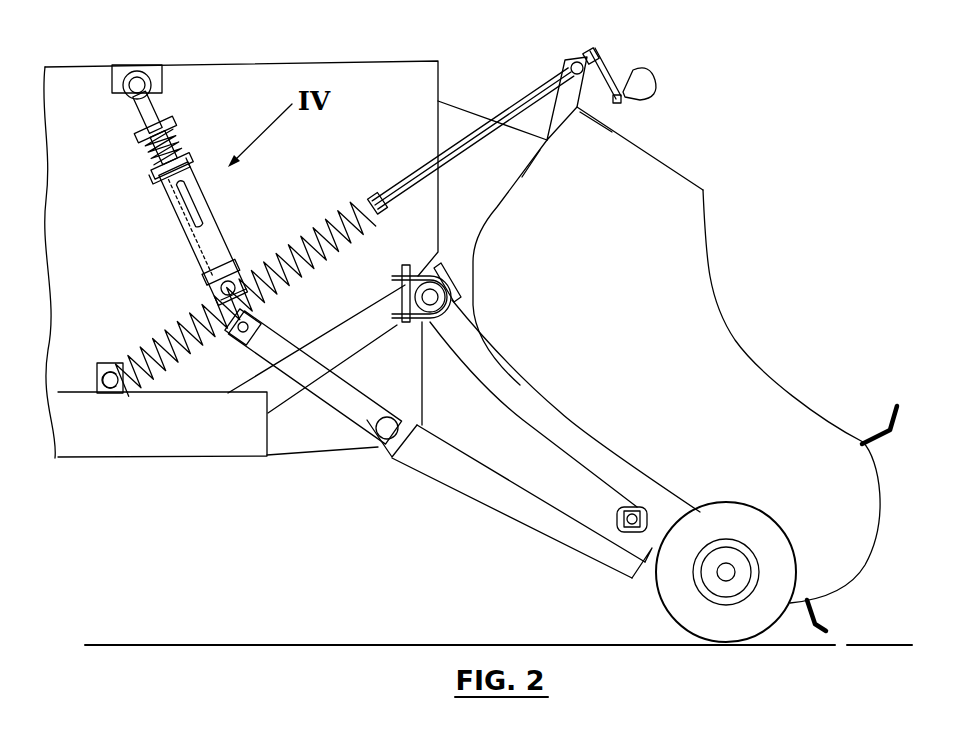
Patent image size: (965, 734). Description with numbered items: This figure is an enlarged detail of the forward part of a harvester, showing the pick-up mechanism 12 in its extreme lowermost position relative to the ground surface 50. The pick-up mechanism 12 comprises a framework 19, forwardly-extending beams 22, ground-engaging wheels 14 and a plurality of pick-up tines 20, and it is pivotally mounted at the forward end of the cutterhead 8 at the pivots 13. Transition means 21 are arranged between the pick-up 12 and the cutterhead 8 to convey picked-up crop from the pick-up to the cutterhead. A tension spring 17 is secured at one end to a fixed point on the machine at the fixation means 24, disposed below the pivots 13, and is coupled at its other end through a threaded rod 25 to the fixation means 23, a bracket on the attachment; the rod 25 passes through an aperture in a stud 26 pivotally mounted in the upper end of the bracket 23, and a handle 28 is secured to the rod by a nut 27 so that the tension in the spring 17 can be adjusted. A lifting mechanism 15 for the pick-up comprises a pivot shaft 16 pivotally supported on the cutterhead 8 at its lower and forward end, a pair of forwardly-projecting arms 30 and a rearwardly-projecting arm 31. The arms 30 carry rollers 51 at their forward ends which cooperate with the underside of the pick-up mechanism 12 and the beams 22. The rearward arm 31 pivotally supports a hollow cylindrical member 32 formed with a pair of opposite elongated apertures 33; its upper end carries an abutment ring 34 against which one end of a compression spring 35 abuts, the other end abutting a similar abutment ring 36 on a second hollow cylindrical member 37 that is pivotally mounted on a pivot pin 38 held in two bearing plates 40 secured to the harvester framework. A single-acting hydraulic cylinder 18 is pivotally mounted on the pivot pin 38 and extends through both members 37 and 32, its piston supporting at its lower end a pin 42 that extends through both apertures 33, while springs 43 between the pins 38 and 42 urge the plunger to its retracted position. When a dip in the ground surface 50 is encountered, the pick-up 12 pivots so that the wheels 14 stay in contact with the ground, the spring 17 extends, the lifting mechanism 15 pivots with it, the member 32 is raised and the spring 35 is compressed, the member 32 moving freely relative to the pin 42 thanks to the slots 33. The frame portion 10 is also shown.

The cutterhead 8 is at (414, 56).
The frame member 10 is at (205, 457).
The pick-up mechanism 12 is at (774, 350).
The pivots 13 is at (453, 292).
The ground-engaging wheels 14 is at (670, 612).
The lifting mechanism 15 is at (560, 536).
The pivot shaft 16 is at (383, 442).
The tension spring 17 is at (333, 217).
The hydraulic cylinder 18 is at (187, 148).
The framework 19 is at (815, 402).
The pick-up tines 20 is at (890, 430).
The transition means 21 is at (458, 117).
The forwardly-extending beams 22 is at (532, 425).
The fixation means 23 is at (583, 95).
The fixation means 24 is at (117, 395).
The threaded rod 25 is at (402, 177).
The stud 26 is at (578, 60).
The nut 27 is at (588, 52).
The handle 28 is at (612, 92).
The forwardly-projecting arms 30 is at (502, 505).
The rearwardly-projecting arm 31 is at (320, 400).
The hollow cylindrical member 32 is at (227, 227).
The elongated apertures 33 is at (213, 210).
The abutment ring 34 is at (157, 182).
The compression spring 35 is at (150, 167).
The abutment ring 36 is at (180, 128).
The hollow cylindrical member 37 is at (170, 110).
The pivot pin 38 is at (153, 90).
The bearing plates 40 is at (112, 83).
The pin 42 is at (213, 285).
The springs 43 is at (140, 110).
The ground surface 50 is at (890, 640).
The rollers 51 is at (642, 568).